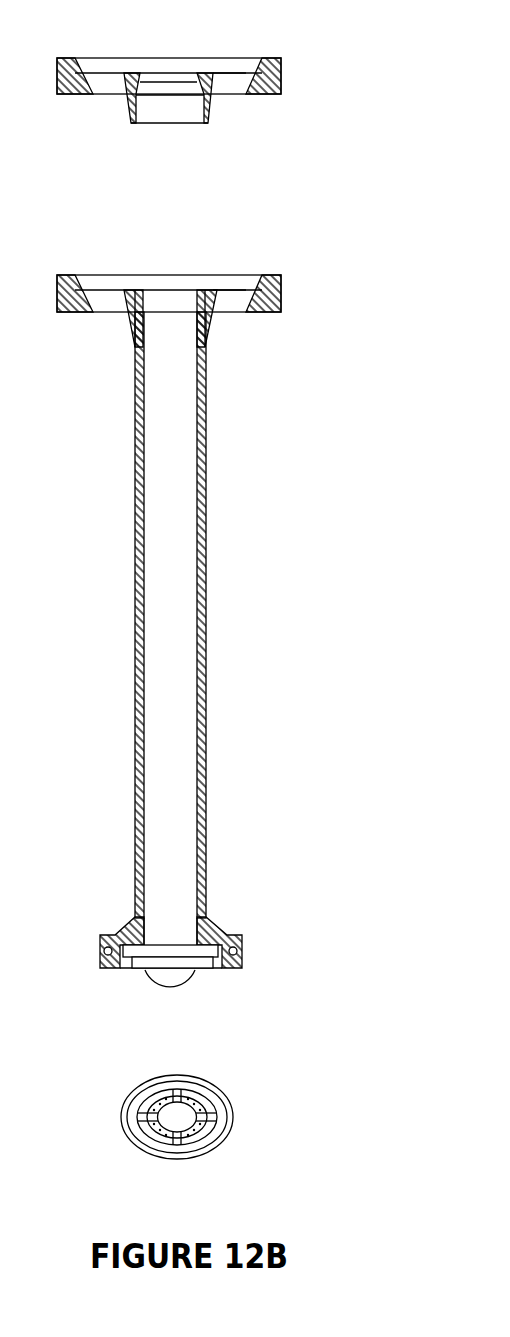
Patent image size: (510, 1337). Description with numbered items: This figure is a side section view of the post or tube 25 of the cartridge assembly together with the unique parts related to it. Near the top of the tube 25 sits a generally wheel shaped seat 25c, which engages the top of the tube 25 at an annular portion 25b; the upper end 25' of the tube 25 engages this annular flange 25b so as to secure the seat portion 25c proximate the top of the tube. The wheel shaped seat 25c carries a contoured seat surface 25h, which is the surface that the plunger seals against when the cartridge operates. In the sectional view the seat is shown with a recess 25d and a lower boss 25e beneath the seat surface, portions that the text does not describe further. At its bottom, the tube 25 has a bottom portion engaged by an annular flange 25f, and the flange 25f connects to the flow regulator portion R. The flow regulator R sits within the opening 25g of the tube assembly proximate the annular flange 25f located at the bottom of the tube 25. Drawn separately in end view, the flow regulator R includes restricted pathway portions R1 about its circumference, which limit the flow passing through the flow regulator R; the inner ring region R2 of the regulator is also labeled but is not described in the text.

The tube 25 is at (230, 628).
The upper end 25' is at (132, 357).
The annular portion 25b is at (128, 100).
The wheel shaped seat 25c is at (281, 77).
The recess 25d is at (232, 88).
The lower boss 25e is at (143, 108).
The flange 25f is at (213, 930).
The opening 25g is at (198, 960).
The contoured seat surface 25h is at (140, 74).
The flow regulator portion R is at (218, 1142).
The restricted pathway portions R1 is at (199, 1098).
The ring inner R2 is at (148, 1140).